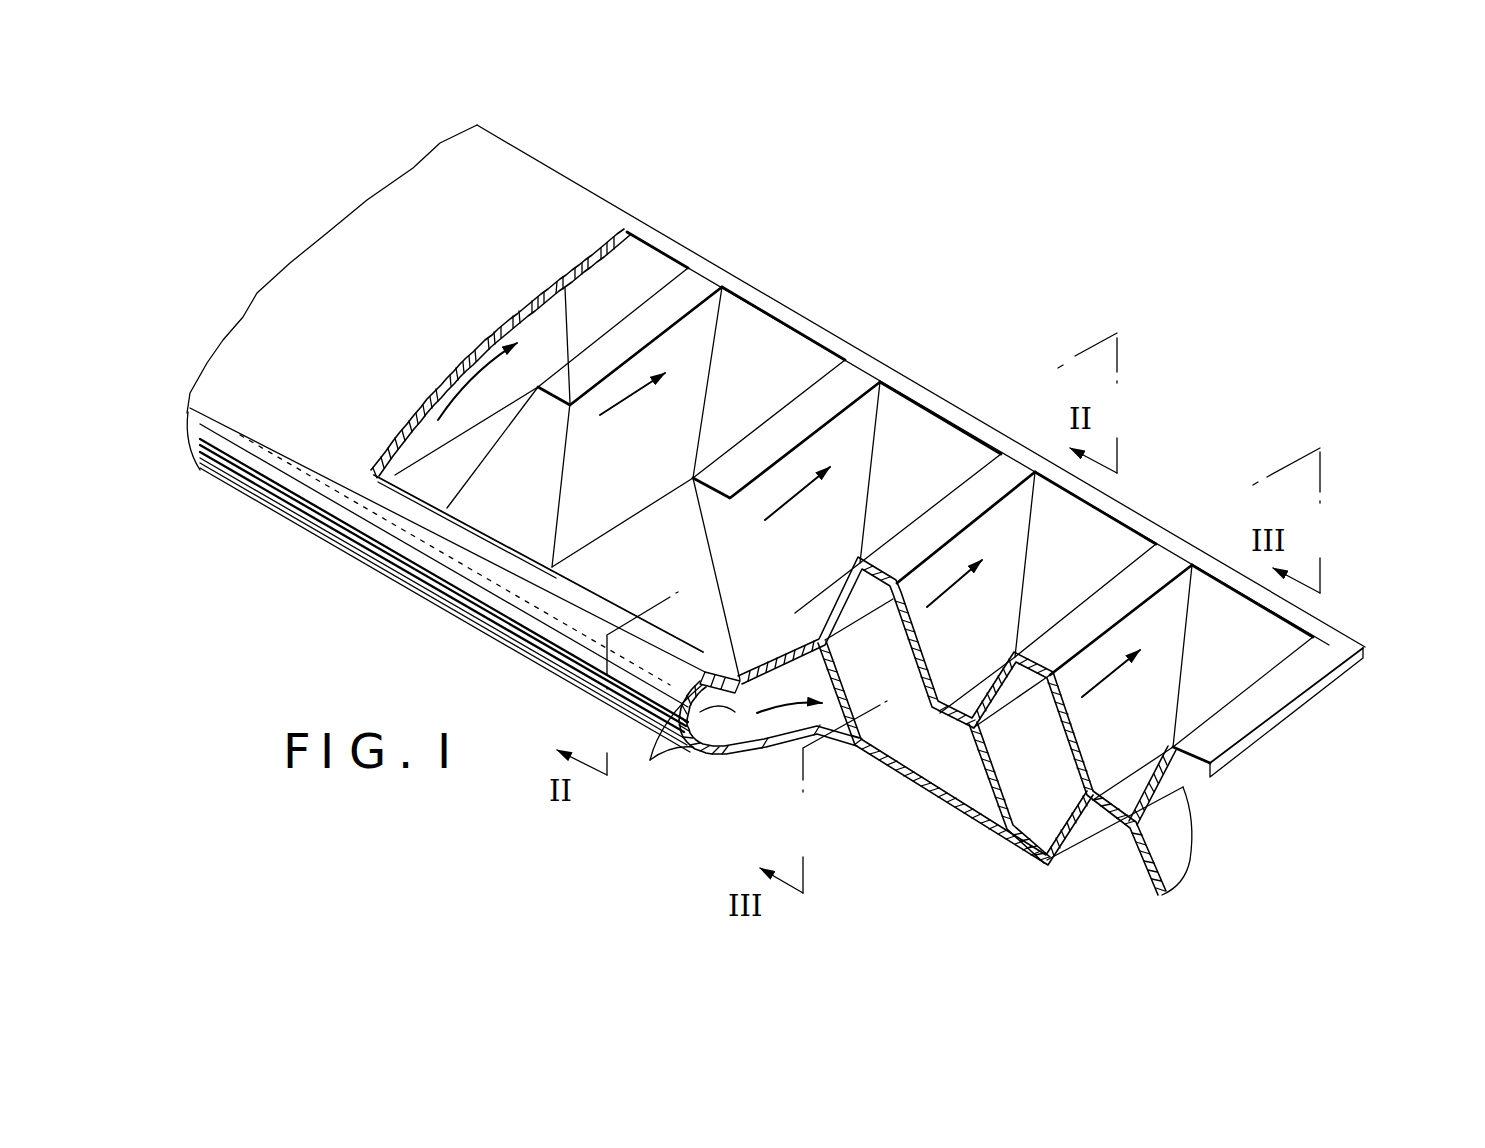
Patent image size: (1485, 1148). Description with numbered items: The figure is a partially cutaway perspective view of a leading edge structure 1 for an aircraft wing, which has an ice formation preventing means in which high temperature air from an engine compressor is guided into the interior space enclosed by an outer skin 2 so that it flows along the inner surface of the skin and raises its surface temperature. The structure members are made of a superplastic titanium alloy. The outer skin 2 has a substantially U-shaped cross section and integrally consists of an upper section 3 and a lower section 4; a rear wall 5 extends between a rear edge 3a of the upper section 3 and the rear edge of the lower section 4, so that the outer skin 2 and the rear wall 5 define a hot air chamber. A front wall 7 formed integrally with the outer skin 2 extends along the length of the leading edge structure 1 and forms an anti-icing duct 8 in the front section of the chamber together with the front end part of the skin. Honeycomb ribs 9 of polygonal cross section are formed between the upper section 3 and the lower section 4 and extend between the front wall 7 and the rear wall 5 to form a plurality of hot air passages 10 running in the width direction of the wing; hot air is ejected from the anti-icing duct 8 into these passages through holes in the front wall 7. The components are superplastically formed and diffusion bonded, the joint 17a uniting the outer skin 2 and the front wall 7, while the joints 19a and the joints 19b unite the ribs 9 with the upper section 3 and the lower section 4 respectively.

The leading edge structure 1 is at (668, 187).
The outer skin 2 is at (522, 162).
The upper section 3 is at (572, 192).
The rear edge 3a is at (1343, 642).
The lower section 4 is at (952, 807).
The rear wall 5 is at (1223, 680).
The front wall 7 is at (737, 705).
The anti-icing duct 8 is at (727, 707).
The honeycomb ribs 9 is at (697, 328).
The hot air passages 10 is at (640, 257).
The joint 17a is at (695, 690).
The joints 19a is at (883, 353).
The joints 19b is at (883, 733).